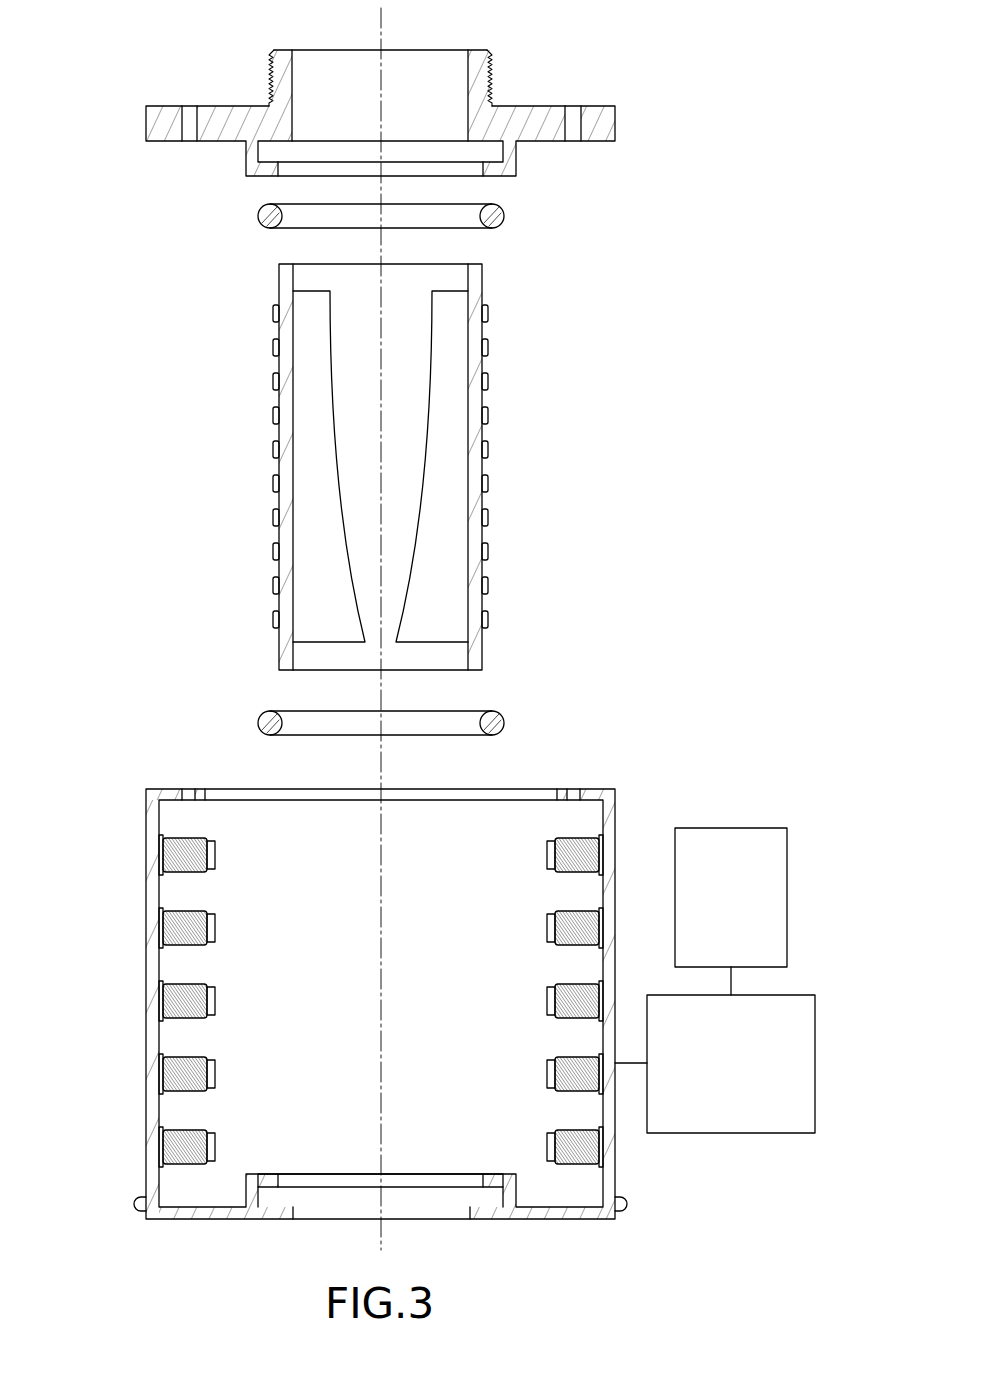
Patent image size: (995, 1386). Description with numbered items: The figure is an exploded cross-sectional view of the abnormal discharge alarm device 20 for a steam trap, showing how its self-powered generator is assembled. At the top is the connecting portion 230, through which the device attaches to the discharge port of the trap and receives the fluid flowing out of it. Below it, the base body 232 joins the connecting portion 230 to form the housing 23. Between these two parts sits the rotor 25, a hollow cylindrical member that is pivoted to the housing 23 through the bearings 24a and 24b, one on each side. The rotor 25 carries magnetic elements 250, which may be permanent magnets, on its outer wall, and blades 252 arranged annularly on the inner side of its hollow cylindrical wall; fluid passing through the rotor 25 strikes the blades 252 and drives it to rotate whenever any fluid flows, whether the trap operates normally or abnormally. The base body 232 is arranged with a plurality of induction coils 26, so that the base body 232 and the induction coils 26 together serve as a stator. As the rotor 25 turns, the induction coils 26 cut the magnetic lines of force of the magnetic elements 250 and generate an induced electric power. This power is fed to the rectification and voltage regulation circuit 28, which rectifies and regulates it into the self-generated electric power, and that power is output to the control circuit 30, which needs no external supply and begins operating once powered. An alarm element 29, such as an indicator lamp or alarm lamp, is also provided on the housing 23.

The abnormal discharge alarm device 20 is at (715, 29).
The housing 23 is at (65, 95).
The connecting portion 230 is at (146, 118).
The base body 232 is at (146, 813).
The bearing 24a is at (505, 213).
The bearing 24b is at (505, 720).
The rotor 25 is at (416, 453).
The magnetic elements 250 is at (489, 382).
The blades 252 is at (437, 305).
The induction coils 26 is at (570, 1165).
The rectification and voltage regulation circuit 28 is at (731, 1133).
The alarm element 29 is at (630, 1206).
The control circuit 30 is at (731, 828).